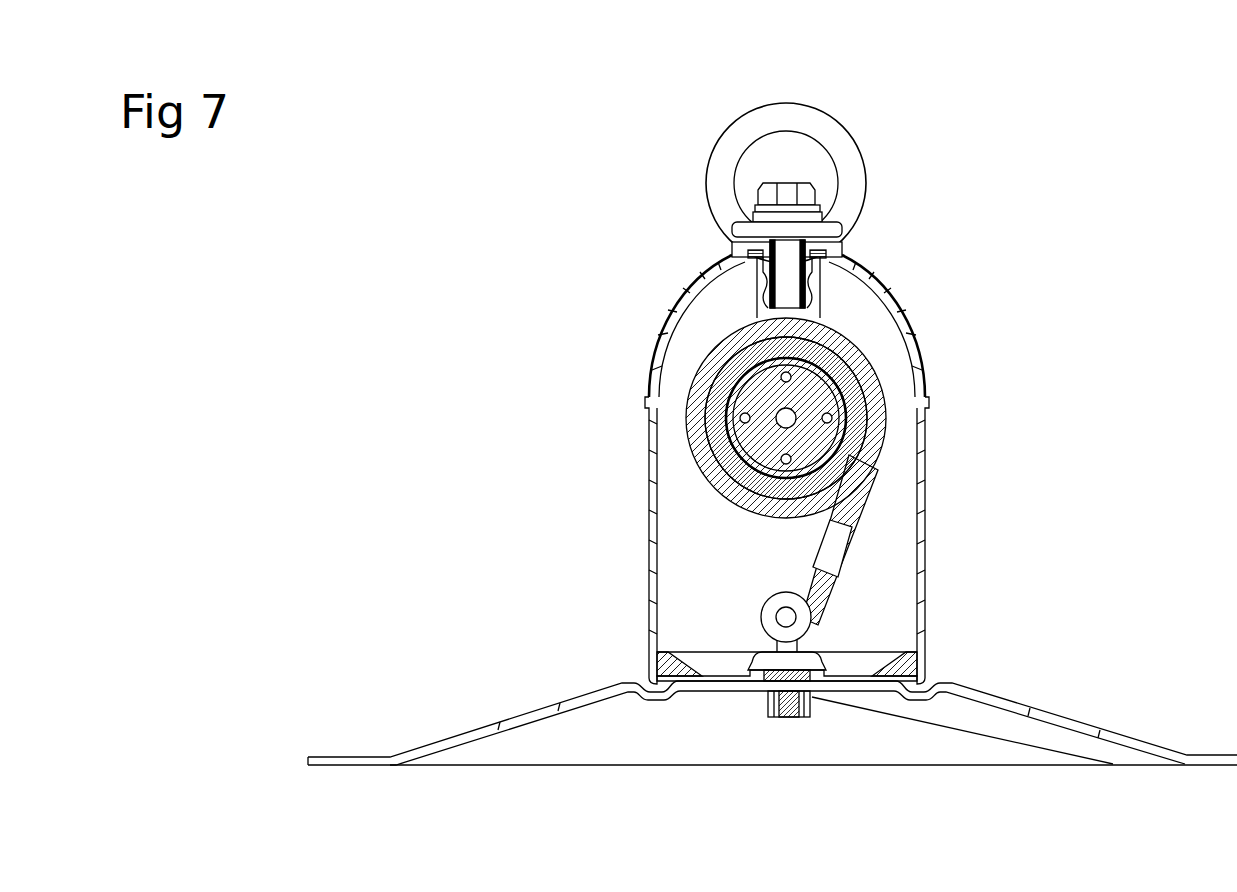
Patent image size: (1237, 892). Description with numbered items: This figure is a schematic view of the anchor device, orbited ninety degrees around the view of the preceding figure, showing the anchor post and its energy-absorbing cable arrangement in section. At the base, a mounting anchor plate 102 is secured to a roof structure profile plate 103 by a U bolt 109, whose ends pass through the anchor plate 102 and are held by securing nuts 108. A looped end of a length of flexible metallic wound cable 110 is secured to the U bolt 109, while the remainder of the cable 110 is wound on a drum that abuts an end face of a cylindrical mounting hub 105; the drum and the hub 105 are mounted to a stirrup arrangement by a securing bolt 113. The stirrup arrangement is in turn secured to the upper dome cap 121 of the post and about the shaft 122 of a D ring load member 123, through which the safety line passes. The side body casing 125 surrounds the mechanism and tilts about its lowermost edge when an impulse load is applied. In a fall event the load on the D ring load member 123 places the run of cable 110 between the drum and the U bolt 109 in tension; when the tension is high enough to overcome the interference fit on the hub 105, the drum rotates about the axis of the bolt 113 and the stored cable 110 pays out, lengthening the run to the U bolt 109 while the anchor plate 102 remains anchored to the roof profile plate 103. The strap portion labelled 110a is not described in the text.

The mounting anchor plate 102 is at (905, 670).
The roof structure profile plate 103 is at (1110, 731).
The cylindrical mounting hub 105 is at (779, 434).
The securing nuts 108 is at (808, 704).
The U bolt 109 is at (784, 616).
The flexible metallic wound cable 110 is at (698, 377).
The cable end strap 110a is at (812, 613).
The securing bolt 113 is at (708, 480).
The upper dome cap 121 is at (682, 297).
The shaft 122 is at (780, 285).
The D ring load member 123 is at (808, 150).
The side body casing 125 is at (921, 496).